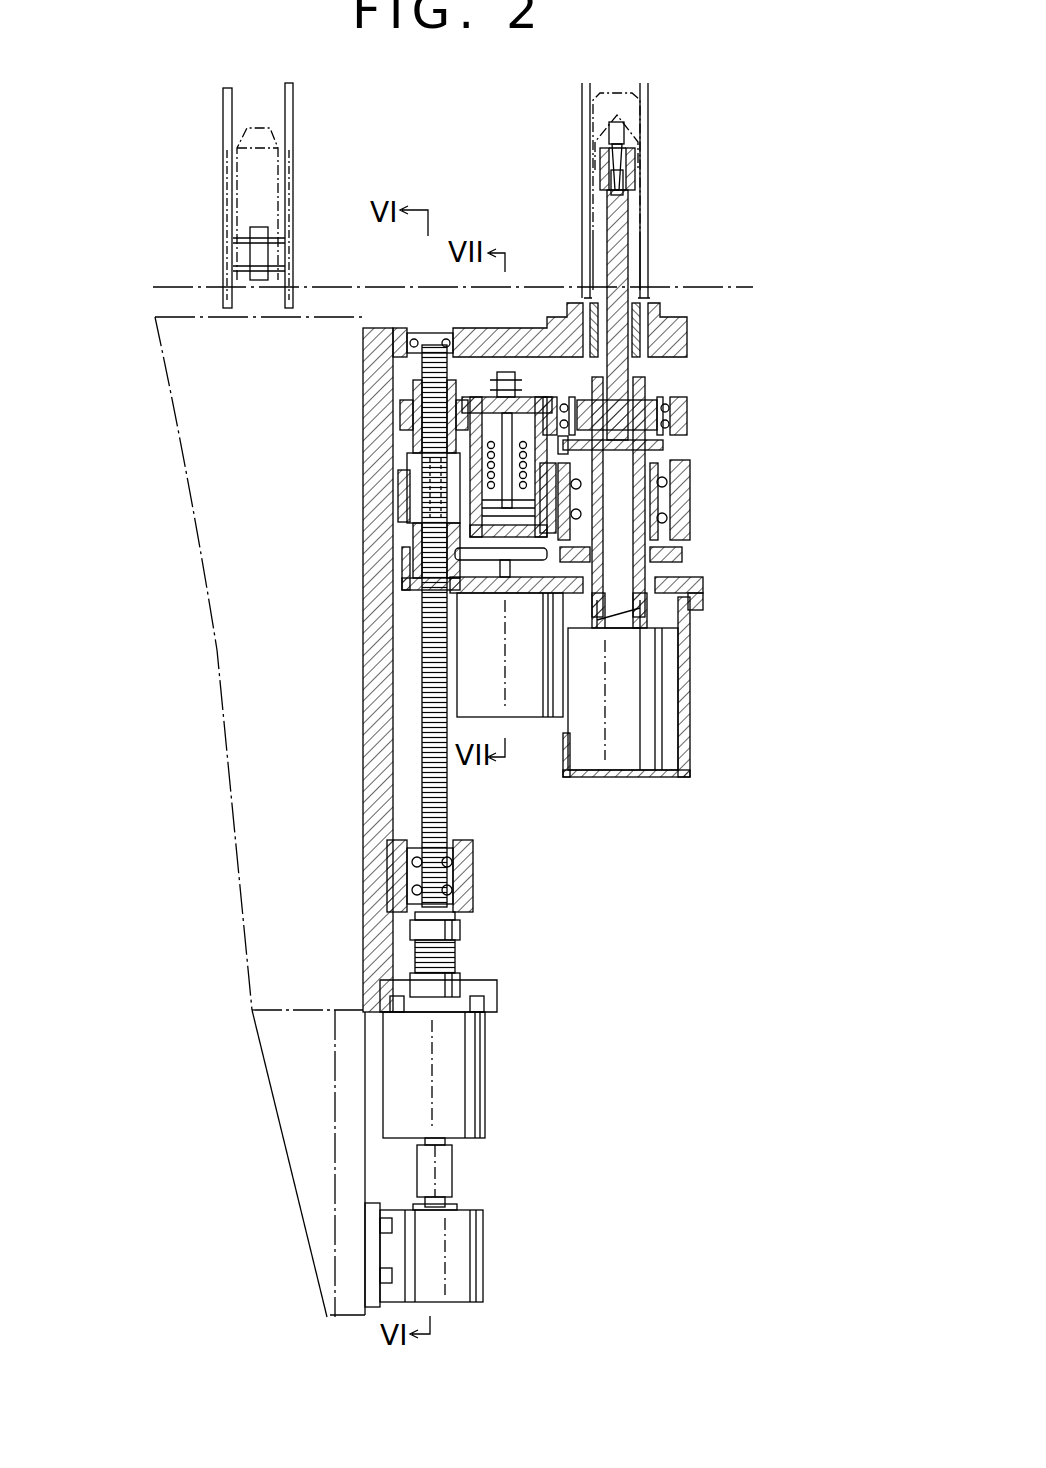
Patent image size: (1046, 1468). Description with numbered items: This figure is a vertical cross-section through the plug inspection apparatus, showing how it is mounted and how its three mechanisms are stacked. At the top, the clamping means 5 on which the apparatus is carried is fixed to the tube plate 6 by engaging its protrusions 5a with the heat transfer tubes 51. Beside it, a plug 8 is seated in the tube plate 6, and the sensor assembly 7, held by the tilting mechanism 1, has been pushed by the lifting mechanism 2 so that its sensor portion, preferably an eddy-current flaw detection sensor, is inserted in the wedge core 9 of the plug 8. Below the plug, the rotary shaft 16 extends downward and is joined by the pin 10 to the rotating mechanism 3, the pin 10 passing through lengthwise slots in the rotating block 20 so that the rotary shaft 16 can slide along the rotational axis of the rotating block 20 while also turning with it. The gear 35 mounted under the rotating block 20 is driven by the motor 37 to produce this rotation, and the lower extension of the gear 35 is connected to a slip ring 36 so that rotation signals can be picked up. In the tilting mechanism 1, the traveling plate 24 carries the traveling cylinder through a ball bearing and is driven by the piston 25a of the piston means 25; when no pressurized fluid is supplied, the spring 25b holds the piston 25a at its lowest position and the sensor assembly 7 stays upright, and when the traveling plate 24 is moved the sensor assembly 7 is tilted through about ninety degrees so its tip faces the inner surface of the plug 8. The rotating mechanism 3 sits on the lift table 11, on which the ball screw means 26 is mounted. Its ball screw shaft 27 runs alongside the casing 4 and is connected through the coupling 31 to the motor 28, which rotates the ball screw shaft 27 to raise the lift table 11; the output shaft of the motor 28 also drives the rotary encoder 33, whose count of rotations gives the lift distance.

The tilting mechanism 1 is at (704, 422).
The lifting mechanism 2 is at (485, 924).
The rotating mechanism 3 is at (710, 554).
The casing 4 is at (352, 800).
The clamping means 5 is at (195, 506).
The protrusions 5a is at (243, 190).
The tube plate 6 is at (698, 290).
The sensor assembly 7 is at (632, 136).
The plug 8 is at (628, 97).
The wedge core 9 is at (598, 163).
The pin 10 is at (662, 446).
The lift table 11 is at (692, 520).
The rotary shaft 16 is at (630, 297).
The rotating block 20 is at (678, 490).
The traveling plate 24 is at (680, 396).
The piston means 25 is at (405, 446).
The piston 25a is at (510, 540).
The spring 25b is at (432, 488).
The ball screw means 26 is at (415, 502).
The ball screw shaft 27 is at (430, 690).
The motor 28 is at (487, 1087).
The coupling 31 is at (462, 932).
The rotary encoder 33 is at (485, 1243).
The gear 35 is at (690, 560).
The slip ring 36 is at (666, 704).
The motor 37 is at (535, 712).
The heat transfer tubes 51 is at (293, 138).